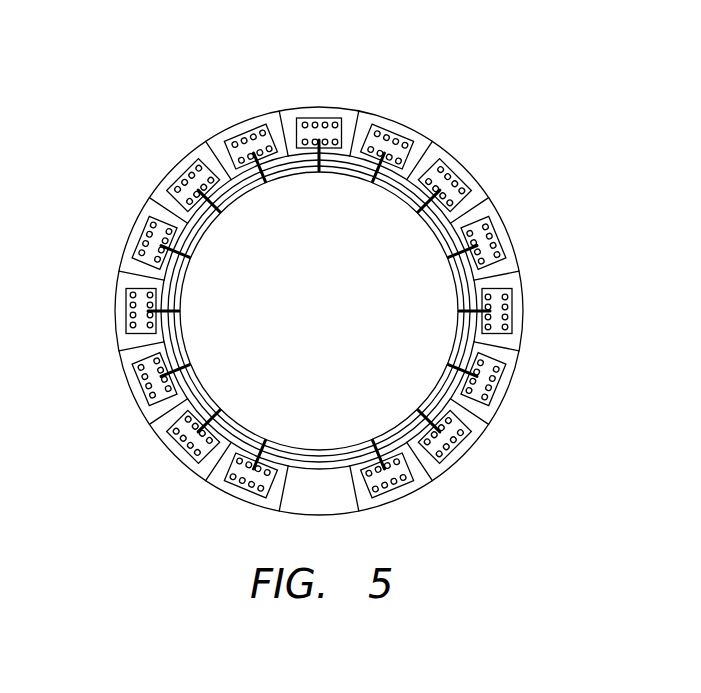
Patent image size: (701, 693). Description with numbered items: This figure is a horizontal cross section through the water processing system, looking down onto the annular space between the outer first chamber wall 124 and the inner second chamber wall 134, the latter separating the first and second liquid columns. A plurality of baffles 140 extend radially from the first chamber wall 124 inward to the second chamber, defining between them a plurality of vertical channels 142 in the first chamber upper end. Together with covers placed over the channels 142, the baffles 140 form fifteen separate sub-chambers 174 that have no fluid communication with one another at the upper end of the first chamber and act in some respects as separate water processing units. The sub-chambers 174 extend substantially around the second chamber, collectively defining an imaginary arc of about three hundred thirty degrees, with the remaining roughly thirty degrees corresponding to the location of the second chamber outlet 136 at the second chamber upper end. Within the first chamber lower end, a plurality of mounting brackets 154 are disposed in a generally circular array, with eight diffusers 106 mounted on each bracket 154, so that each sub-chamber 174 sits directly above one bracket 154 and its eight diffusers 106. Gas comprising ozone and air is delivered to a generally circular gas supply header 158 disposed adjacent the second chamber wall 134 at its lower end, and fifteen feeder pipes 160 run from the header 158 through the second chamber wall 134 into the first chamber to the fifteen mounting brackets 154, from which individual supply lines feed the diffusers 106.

The diffuser 106 is at (373, 133).
The first chamber wall 124 is at (243, 121).
The second chamber wall 134 is at (447, 384).
The second chamber outlet 136 is at (320, 487).
The baffle 140 is at (427, 158).
The vertical channel 142 is at (477, 407).
The mounting bracket 154 is at (408, 489).
The gas supply header 158 is at (205, 388).
The feeder pipe 160 is at (178, 254).
The sub-chamber 174 is at (291, 130).